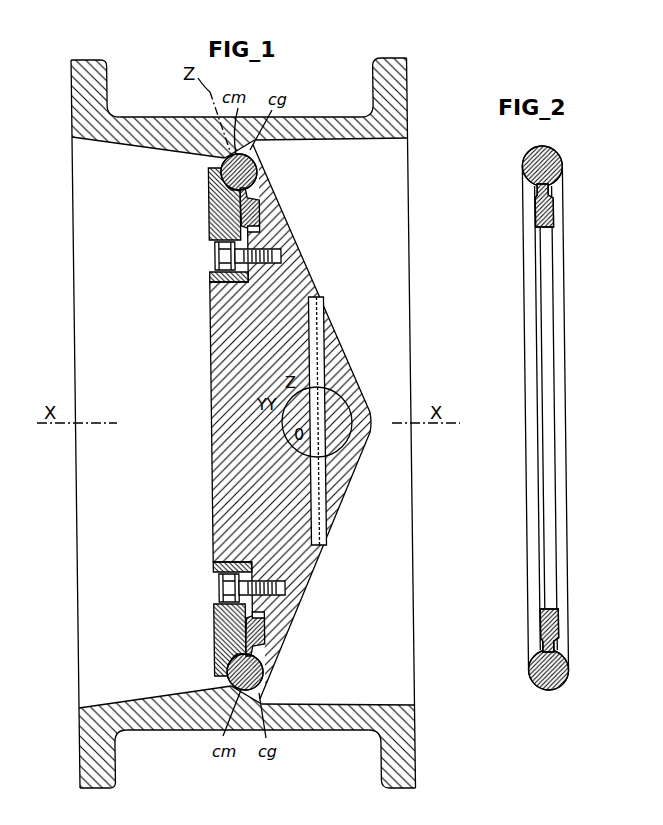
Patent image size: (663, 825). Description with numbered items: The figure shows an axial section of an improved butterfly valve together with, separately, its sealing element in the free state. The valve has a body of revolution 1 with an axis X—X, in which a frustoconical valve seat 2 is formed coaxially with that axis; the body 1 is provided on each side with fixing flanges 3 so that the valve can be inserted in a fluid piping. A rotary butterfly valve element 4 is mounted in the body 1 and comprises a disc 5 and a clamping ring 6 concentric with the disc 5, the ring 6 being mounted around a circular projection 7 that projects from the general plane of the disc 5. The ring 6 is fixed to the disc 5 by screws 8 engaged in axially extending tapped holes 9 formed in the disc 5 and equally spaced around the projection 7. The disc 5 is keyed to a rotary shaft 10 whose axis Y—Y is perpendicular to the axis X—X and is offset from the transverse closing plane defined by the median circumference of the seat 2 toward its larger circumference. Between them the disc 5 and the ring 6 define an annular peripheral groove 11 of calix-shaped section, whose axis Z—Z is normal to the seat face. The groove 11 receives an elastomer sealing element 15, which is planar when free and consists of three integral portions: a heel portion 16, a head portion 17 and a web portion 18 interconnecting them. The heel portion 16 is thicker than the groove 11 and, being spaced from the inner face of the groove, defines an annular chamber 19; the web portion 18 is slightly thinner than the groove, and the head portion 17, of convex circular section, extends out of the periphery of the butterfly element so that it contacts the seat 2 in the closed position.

In FIG. 1, the body of revolution 1 is at (328, 117).
In FIG. 1, the valve seat 2 is at (262, 168).
In FIG. 1, the flanges 3 is at (83, 101).
In FIG. 1, the rotary butterfly valve element 4 is at (333, 527).
In FIG. 1, the disc 5 is at (305, 598).
In FIG. 1, the clamping ring 6 is at (211, 213).
In FIG. 1, the circular projection 7 is at (214, 424).
In FIG. 1, the screws 8 is at (227, 258).
In FIG. 1, the tapped holes 9 is at (272, 266).
In FIG. 1, the rotary shaft 10 is at (345, 432).
In FIG. 1, the annular peripheral groove 11 is at (262, 200).
In FIG. 1, the annular chamber 19 is at (265, 231).
In FIG. 2, the sealing element 15 is at (568, 572).
In FIG. 2, the heel portion 16 is at (560, 618).
In FIG. 2, the head portion 17 is at (567, 680).
In FIG. 2, the web portion 18 is at (562, 645).